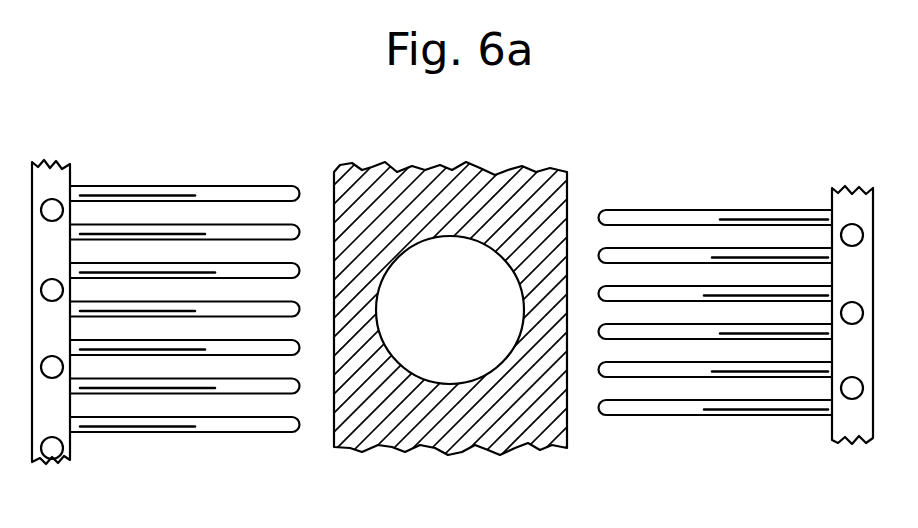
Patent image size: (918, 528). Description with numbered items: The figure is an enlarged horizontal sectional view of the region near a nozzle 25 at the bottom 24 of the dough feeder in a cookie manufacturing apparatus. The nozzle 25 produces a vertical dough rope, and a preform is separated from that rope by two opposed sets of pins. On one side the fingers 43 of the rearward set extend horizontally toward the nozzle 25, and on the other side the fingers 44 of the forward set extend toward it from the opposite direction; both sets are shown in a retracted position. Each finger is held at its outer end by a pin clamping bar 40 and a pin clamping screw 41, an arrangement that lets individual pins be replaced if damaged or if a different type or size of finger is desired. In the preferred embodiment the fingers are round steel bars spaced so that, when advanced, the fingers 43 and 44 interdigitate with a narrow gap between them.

The bottom of feeder 24 is at (512, 185).
The nozzle 25 is at (459, 322).
The pin clamping bar 40 is at (74, 176).
The pin clamping screw 41 is at (63, 369).
The finger 43 is at (182, 187).
The finger 44 is at (676, 209).